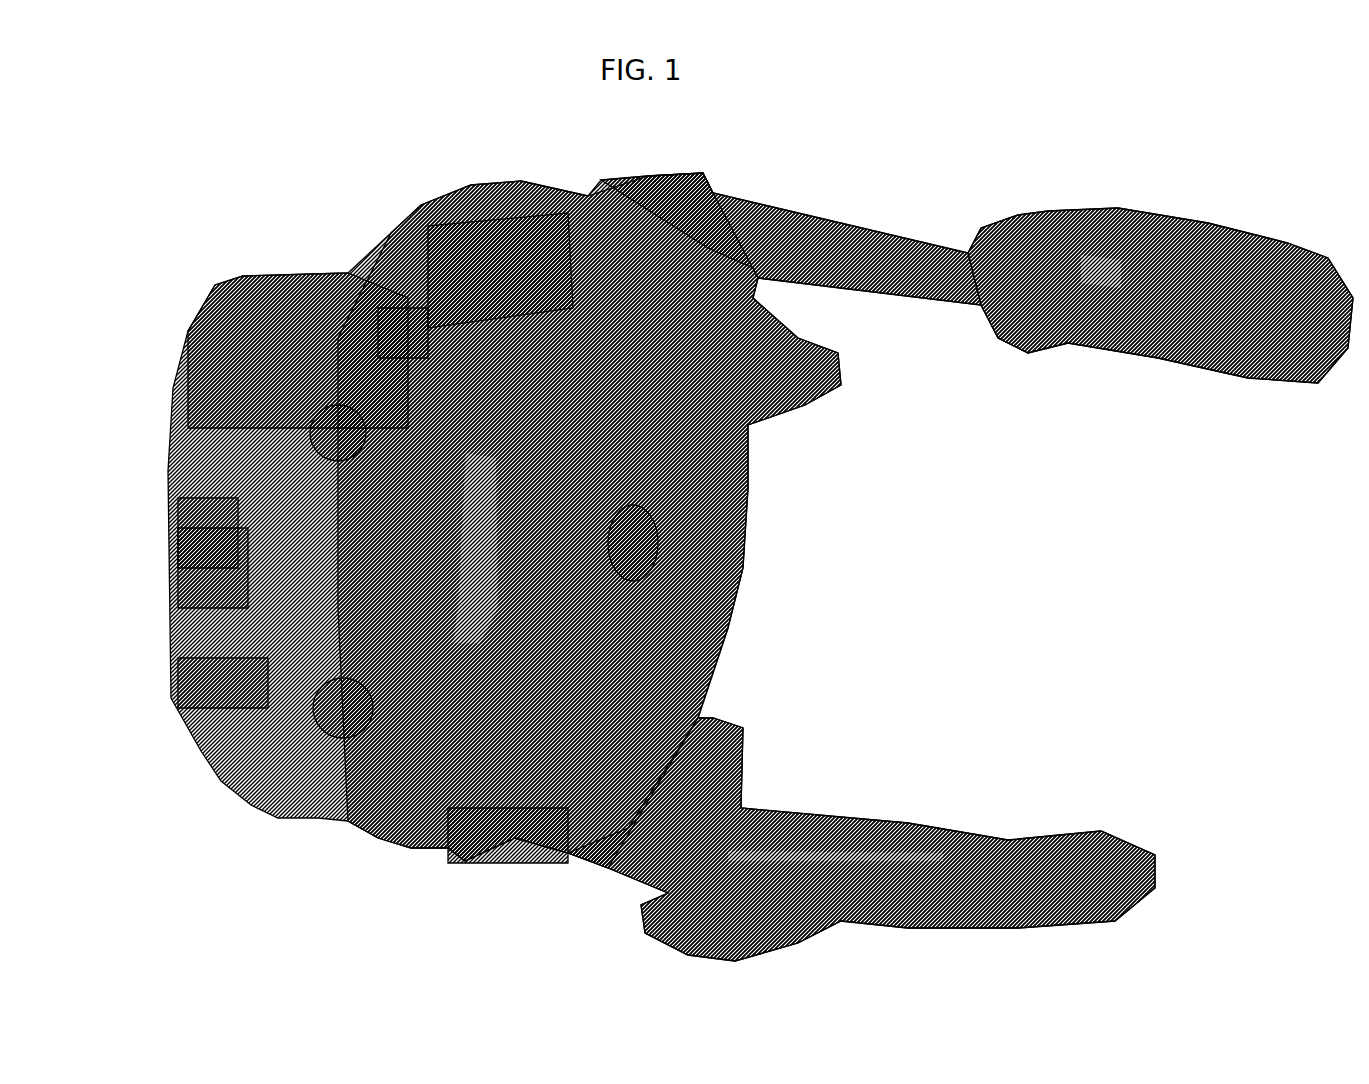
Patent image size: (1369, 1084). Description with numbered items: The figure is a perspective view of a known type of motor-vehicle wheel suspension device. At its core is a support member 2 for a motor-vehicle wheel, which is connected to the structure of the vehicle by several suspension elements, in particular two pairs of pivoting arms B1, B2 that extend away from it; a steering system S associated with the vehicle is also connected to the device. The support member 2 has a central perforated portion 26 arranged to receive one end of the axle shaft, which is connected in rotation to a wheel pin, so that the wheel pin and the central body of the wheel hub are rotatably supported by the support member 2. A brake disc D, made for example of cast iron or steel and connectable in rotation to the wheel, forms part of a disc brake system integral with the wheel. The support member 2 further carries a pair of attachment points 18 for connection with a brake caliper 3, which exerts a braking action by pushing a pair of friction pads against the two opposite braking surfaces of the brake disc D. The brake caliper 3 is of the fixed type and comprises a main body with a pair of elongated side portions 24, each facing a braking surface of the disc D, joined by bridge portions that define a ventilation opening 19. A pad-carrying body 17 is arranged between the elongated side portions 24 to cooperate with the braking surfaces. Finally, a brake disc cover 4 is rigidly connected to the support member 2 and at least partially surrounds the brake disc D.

The support member 2 is at (487, 258).
The brake caliper 3 is at (302, 280).
The brake disc cover 4 is at (478, 858).
The pad-carrying body 17 is at (205, 537).
The attachment points 18 is at (330, 447).
The ventilation opening 19 is at (210, 682).
The elongated side portions 24 is at (395, 322).
The central perforated portion 26 is at (632, 535).
The pivoting arms B1 is at (732, 190).
The pivoting arms B2 is at (595, 865).
The brake disc D is at (720, 588).
The steering system S is at (820, 280).